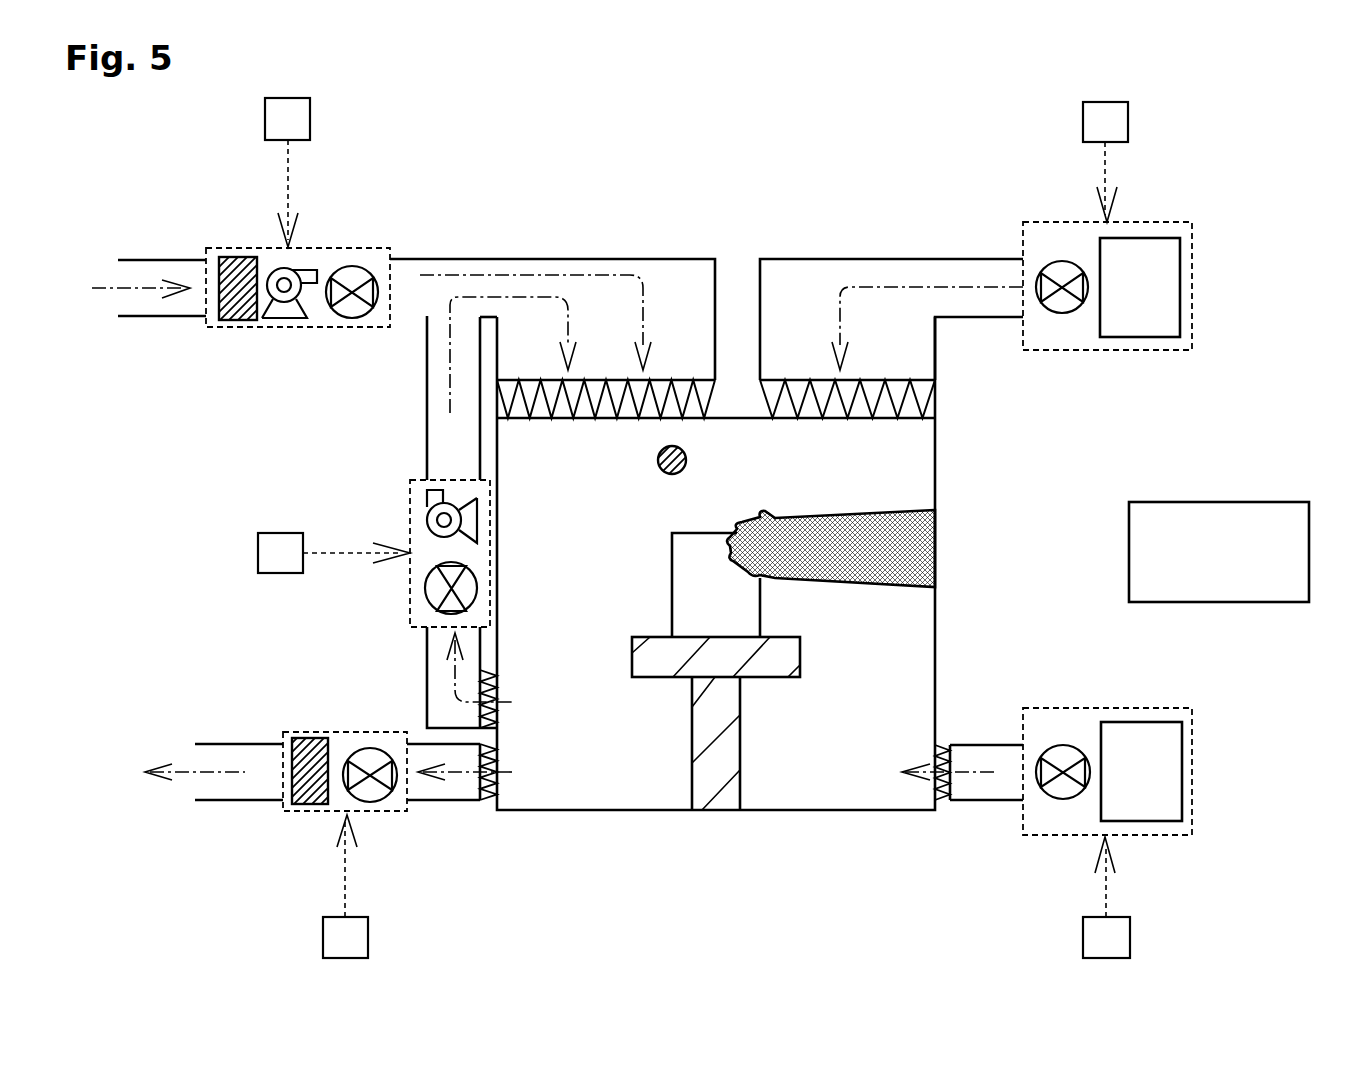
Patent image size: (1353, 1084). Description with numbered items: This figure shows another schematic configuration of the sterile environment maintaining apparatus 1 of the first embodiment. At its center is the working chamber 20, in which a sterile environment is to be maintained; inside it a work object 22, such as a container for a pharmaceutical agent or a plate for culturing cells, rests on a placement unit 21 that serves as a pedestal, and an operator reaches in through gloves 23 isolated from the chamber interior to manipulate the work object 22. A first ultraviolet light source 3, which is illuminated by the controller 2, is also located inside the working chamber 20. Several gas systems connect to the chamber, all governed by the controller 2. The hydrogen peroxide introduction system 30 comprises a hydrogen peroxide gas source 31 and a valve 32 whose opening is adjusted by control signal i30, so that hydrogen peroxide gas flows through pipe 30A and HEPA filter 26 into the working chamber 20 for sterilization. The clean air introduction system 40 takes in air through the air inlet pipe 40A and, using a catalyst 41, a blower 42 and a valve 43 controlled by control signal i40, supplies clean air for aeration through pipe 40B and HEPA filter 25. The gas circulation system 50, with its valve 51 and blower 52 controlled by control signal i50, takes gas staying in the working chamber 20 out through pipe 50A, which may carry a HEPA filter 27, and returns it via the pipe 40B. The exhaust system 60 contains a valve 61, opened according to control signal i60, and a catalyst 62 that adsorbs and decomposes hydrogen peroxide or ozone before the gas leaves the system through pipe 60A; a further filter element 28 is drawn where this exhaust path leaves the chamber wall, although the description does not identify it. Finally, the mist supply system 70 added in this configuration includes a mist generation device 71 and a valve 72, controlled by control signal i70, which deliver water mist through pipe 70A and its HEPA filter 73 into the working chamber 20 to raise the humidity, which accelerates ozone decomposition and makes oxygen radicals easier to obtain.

The sterile environment maintaining apparatus 1 is at (1232, 878).
The controller 2 is at (1230, 502).
The first ultraviolet light source 3 is at (658, 458).
The working chamber 20 is at (840, 811).
The placement unit 21 is at (800, 655).
The work object 22 is at (682, 583).
The gloves 23 is at (918, 557).
The HEPA filter 25 is at (582, 410).
The HEPA filter 26 is at (925, 405).
The HEPA filter 27 is at (500, 678).
The filter 28 is at (500, 786).
The hydrogen peroxide introduction system 30 is at (1148, 321).
The pipe 30A is at (865, 257).
The hydrogen peroxide gas source 31 is at (1147, 337).
The valve 32 is at (1062, 313).
The clean air introduction system 40 is at (305, 297).
The air inlet pipe 40A is at (168, 317).
The pipe 40B is at (545, 257).
The catalyst 41 is at (240, 320).
The blower 42 is at (288, 320).
The valve 43 is at (352, 265).
The gas circulation system 50 is at (398, 538).
The pipe 50A is at (425, 697).
The valve 51 is at (410, 598).
The blower 52 is at (430, 506).
The exhaust system 60 is at (326, 770).
The pipe 60A is at (210, 744).
The valve 61 is at (375, 801).
The catalyst 62 is at (308, 805).
The mist supply system 70 is at (1151, 735).
The pipe 70A is at (973, 760).
The mist generation device 71 is at (1145, 722).
The valve 72 is at (1063, 745).
The HEPA filter 73 is at (943, 801).
The control signal i30 is at (1135, 182).
The control signal i40 is at (313, 193).
The control signal i50 is at (356, 572).
The control signal i60 is at (322, 866).
The control signal i70 is at (1135, 877).